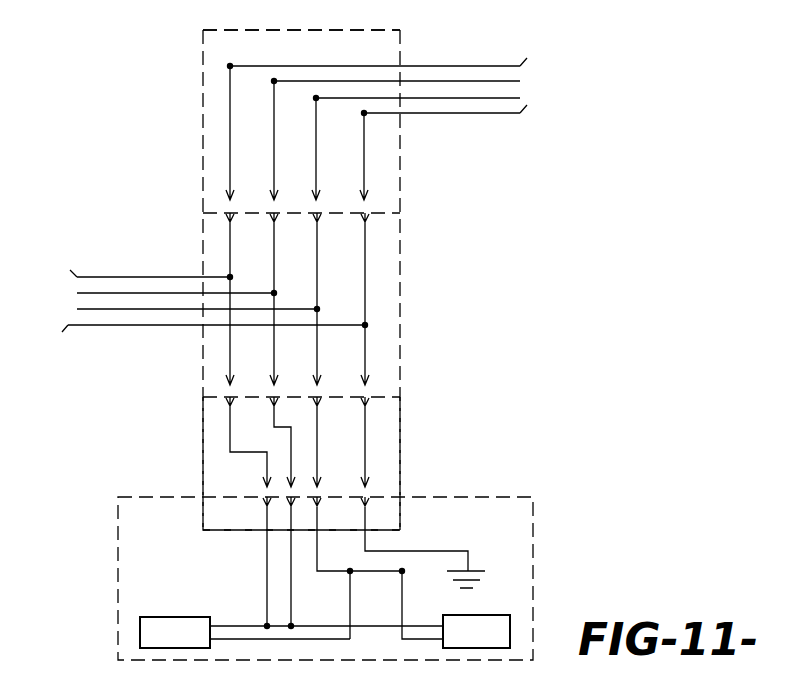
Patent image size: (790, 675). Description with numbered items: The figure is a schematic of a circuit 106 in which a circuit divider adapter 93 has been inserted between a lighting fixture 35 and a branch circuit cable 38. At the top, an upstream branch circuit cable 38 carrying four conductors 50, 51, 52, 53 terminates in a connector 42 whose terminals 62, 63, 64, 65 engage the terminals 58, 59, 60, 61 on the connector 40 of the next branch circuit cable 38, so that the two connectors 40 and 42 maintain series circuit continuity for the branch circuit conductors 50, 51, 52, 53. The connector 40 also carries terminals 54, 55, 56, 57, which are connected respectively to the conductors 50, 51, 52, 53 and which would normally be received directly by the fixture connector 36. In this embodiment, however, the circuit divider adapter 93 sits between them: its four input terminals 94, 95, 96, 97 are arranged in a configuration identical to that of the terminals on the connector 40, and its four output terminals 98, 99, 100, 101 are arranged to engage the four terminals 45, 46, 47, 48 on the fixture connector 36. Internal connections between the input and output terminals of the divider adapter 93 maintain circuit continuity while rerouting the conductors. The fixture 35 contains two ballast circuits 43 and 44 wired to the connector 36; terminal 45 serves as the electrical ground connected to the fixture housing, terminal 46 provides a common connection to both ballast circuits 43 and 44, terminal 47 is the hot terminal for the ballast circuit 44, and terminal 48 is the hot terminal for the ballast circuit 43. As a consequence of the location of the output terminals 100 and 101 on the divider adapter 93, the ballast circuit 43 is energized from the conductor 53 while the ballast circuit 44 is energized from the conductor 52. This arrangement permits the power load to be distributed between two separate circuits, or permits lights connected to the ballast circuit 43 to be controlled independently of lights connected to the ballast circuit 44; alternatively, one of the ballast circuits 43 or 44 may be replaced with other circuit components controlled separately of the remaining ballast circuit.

The lighting fixture 35 is at (485, 496).
The connector 36 is at (218, 530).
The branch circuit cable 38 is at (399, 86).
The connector 40 is at (400, 274).
The connector 42 is at (368, 30).
The ballast circuit 43 is at (172, 617).
The ballast circuit 44 is at (462, 617).
The terminal 45 is at (373, 502).
The terminal 46 is at (321, 500).
The terminal 47 is at (294, 506).
The terminal 48 is at (265, 500).
The conductor 50 is at (475, 115).
The conductor 51 is at (425, 100).
The conductor 52 is at (448, 60).
The conductor 53 is at (475, 64).
The terminal 54 is at (372, 383).
The terminal 55 is at (350, 372).
The terminal 56 is at (308, 368).
The terminal 57 is at (262, 368).
The terminal 58 is at (369, 218).
The terminal 59 is at (319, 220).
The terminal 60 is at (276, 220).
The terminal 61 is at (232, 220).
The terminal 62 is at (372, 200).
The terminal 63 is at (343, 180).
The terminal 64 is at (300, 180).
The terminal 65 is at (256, 180).
The circuit divider adapter 93 is at (402, 432).
The input terminal 94 is at (372, 400).
The input terminal 95 is at (319, 404).
The input terminal 96 is at (276, 404).
The input terminal 97 is at (232, 404).
The output terminal 98 is at (372, 486).
The output terminal 99 is at (352, 470).
The output terminal 100 is at (288, 484).
The output terminal 101 is at (262, 487).
The circuit 106 is at (198, 45).